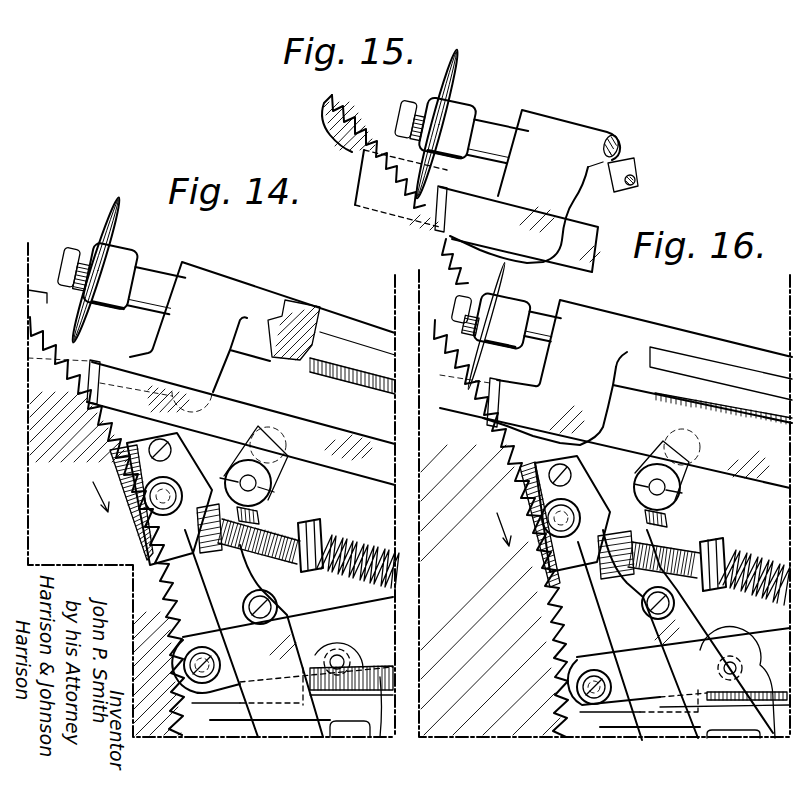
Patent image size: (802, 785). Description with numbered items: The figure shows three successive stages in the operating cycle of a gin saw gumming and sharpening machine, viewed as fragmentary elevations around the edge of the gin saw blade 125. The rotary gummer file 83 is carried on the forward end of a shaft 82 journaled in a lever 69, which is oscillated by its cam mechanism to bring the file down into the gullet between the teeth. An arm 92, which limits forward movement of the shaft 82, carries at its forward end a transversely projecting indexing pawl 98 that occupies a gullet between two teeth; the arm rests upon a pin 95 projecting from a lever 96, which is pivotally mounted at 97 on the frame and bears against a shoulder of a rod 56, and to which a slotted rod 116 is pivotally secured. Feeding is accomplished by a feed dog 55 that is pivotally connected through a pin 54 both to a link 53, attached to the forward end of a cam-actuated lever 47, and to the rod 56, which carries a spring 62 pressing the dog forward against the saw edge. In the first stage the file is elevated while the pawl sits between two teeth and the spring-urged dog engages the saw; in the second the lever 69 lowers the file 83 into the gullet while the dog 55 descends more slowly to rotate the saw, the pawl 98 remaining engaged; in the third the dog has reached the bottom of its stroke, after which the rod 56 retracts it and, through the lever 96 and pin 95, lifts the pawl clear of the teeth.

In FIG. 14, the rotary gummer file 83 is at (114, 206).
In FIG. 15, the rotary gummer file 83 is at (461, 54).
In FIG. 16, the rotary gummer file 83 is at (508, 276).
In FIG. 14, the shaft 82 is at (150, 279).
In FIG. 15, the shaft 82 is at (617, 190).
In FIG. 16, the shaft 82 is at (537, 334).
In FIG. 14, the lever 69 is at (251, 288).
In FIG. 15, the lever 69 is at (557, 136).
In FIG. 16, the lever 69 is at (647, 331).
In FIG. 14, the indexing pawl 98 is at (101, 365).
In FIG. 15, the indexing pawl 98 is at (450, 190).
In FIG. 16, the indexing pawl 98 is at (497, 402).
In FIG. 14, the arm 92 is at (314, 430).
In FIG. 15, the arm 92 is at (556, 243).
In FIG. 16, the arm 92 is at (774, 477).
In FIG. 14, the gin saw blade 125 is at (102, 559).
In FIG. 15, the gin saw blade 125 is at (330, 112).
In FIG. 16, the gin saw blade 125 is at (481, 610).
In FIG. 14, the feed dog 55 is at (157, 442).
In FIG. 16, the feed dog 55 is at (575, 468).
In FIG. 14, the pin 54 is at (170, 505).
In FIG. 16, the pin 54 is at (568, 513).
In FIG. 14, the pin 95 is at (240, 471).
In FIG. 16, the pin 95 is at (681, 494).
In FIG. 14, the rod 56 is at (279, 531).
In FIG. 16, the rod 56 is at (654, 566).
In FIG. 14, the spring 62 is at (358, 545).
In FIG. 16, the spring 62 is at (760, 551).
In FIG. 14, the lever 96 is at (282, 600).
In FIG. 16, the lever 96 is at (647, 530).
In FIG. 14, the link 53 is at (193, 611).
In FIG. 16, the link 53 is at (587, 620).
In FIG. 14, the lever 47 is at (243, 674).
In FIG. 16, the lever 47 is at (764, 631).
In FIG. 14, the pivot 97 is at (333, 697).
In FIG. 16, the pivot 97 is at (730, 705).
In FIG. 14, the rod 116 is at (281, 721).
In FIG. 16, the rod 116 is at (668, 733).